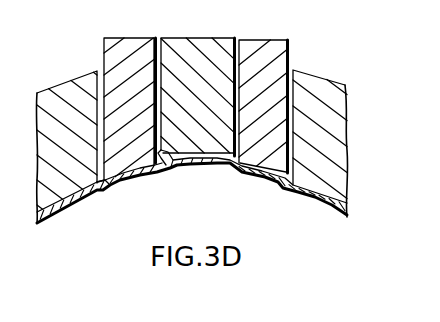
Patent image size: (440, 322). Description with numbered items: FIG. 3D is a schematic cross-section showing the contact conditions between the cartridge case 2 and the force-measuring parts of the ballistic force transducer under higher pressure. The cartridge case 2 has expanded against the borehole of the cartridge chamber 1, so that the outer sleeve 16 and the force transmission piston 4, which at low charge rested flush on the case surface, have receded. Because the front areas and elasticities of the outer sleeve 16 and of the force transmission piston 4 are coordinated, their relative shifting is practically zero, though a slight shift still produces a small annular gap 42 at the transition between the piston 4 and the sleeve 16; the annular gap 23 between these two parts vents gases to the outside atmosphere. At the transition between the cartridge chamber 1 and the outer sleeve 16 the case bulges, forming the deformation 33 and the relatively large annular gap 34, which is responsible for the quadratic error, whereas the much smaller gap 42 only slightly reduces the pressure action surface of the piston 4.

The cartridge chamber 1 is at (66, 111).
The outer sleeve 16 is at (133, 81).
The annular gap 23 is at (158, 77).
The force transmission piston 4 is at (212, 68).
The annular gap 42 is at (166, 171).
The deformation 33 is at (117, 186).
The annular gap 34 is at (102, 192).
The cartridge case 2 is at (73, 200).